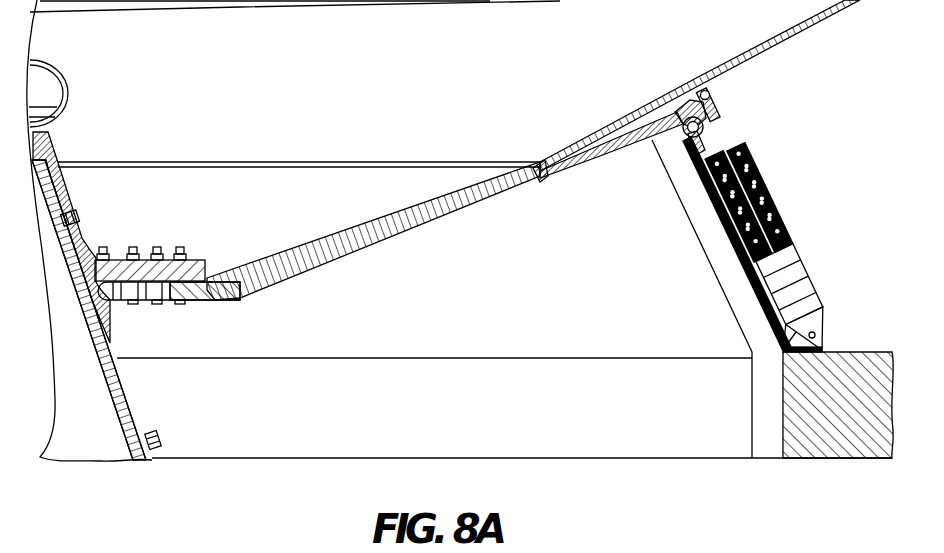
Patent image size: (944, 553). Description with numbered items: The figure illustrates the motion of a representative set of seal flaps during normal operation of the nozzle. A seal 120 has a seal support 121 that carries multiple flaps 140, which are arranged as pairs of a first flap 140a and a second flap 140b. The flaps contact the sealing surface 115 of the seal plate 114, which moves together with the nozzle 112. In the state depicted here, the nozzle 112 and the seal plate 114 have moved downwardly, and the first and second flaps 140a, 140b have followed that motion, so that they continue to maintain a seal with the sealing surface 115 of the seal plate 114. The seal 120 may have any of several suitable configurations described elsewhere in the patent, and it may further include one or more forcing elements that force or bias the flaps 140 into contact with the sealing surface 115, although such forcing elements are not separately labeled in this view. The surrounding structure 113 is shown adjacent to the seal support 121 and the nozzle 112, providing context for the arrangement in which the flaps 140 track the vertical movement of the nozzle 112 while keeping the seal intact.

The nozzle 112 is at (118, 385).
The floor structure 113 is at (849, 363).
The seal plate 114 is at (790, 24).
The sealing surface 115 is at (402, 226).
The seal 120 is at (663, 168).
The seal support 121 is at (768, 414).
The flaps 140 is at (611, 226).
The first flap 140a is at (540, 178).
The second flap 140b is at (592, 158).